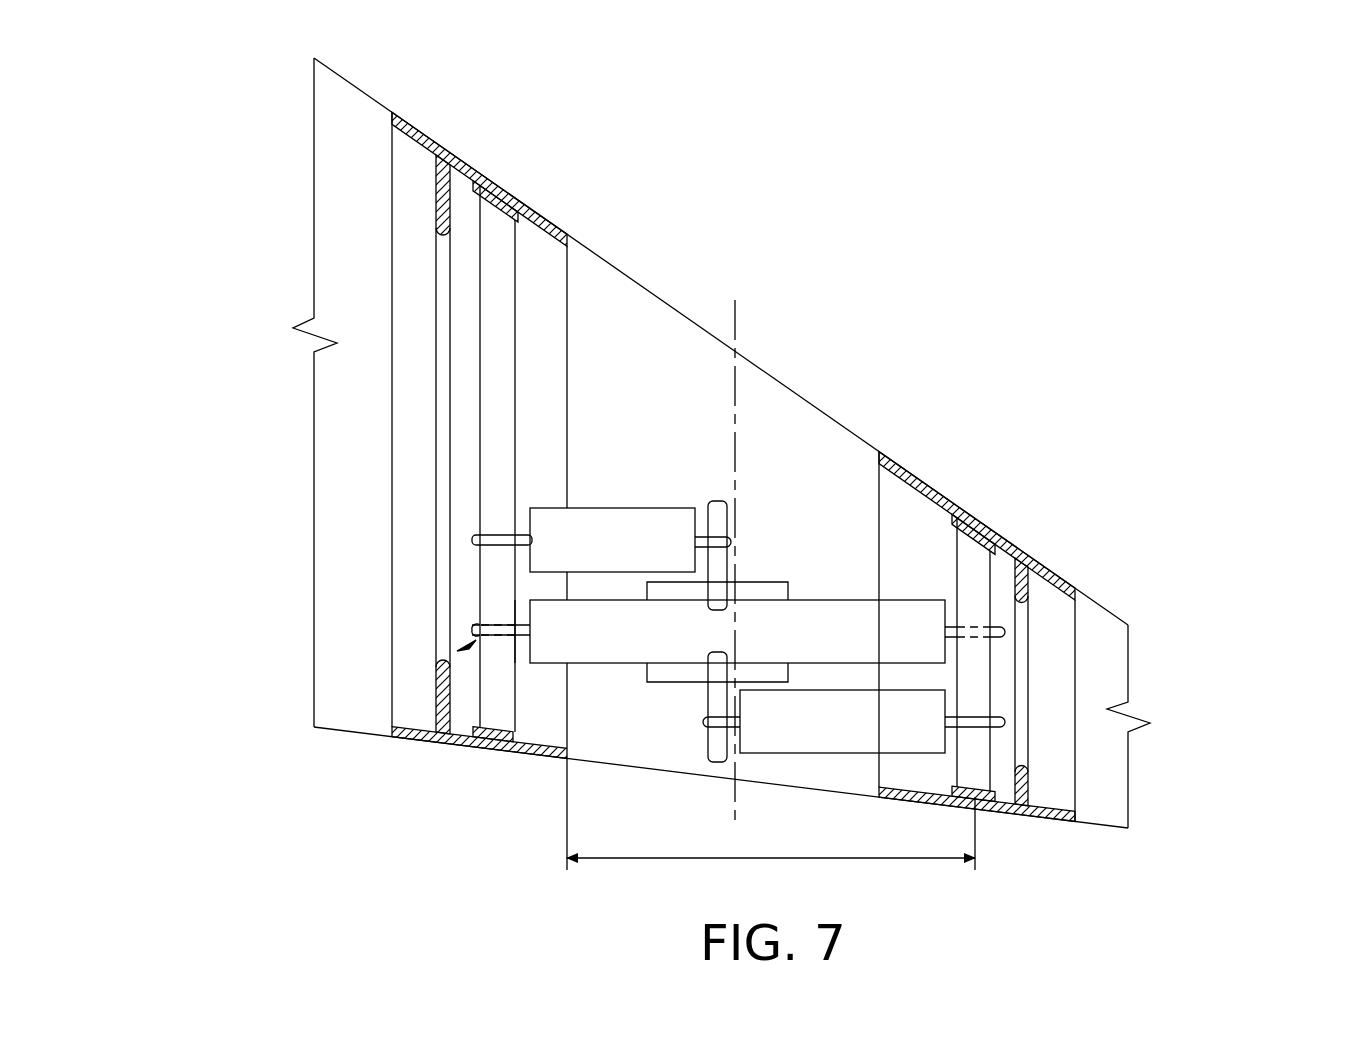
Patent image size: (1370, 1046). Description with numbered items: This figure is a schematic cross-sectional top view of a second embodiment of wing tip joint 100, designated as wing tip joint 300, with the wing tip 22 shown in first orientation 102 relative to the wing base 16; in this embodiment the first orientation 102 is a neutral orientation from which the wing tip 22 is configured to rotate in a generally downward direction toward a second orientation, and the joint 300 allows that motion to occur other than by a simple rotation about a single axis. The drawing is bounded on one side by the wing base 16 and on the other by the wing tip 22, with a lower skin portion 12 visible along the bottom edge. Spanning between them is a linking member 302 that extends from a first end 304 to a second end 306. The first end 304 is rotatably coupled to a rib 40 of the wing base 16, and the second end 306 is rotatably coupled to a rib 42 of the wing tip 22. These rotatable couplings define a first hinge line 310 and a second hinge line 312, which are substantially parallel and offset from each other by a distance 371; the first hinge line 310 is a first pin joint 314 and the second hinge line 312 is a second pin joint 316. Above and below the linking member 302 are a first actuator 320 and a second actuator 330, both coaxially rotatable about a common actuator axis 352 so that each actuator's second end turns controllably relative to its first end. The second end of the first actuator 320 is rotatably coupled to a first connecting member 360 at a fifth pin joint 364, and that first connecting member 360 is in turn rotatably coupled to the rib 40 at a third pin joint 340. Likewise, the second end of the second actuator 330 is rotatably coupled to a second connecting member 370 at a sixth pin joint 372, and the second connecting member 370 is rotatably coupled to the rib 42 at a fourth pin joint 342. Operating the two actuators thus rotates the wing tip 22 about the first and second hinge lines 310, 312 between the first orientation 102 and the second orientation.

The lower skin 12 is at (405, 800).
The wing base 16 is at (350, 83).
The wing tip 22 is at (1093, 598).
The rib 40 is at (540, 250).
The rib 42 is at (893, 500).
The wing tip joint 100 is at (753, 469).
The first orientation 102 is at (1208, 596).
The wing tip joint 300 is at (753, 469).
The linking member 302 is at (701, 631).
The first end 304 is at (522, 667).
The second end 306 is at (1012, 632).
The first hinge line 310 is at (332, 444).
The second hinge line 312 is at (1132, 691).
The first pin joint 314 is at (480, 418).
The second pin joint 316 is at (993, 750).
The first actuator 320 is at (764, 582).
The second actuator 330 is at (665, 682).
The third pin joint 340 is at (480, 313).
The fourth pin joint 342 is at (995, 580).
The actuator axis 352 is at (737, 315).
The first connecting member 360 is at (601, 540).
The fifth pin joint 364 is at (717, 500).
The second connecting member 370 is at (854, 721).
The distance 371 is at (687, 858).
The sixth pin joint 372 is at (718, 763).